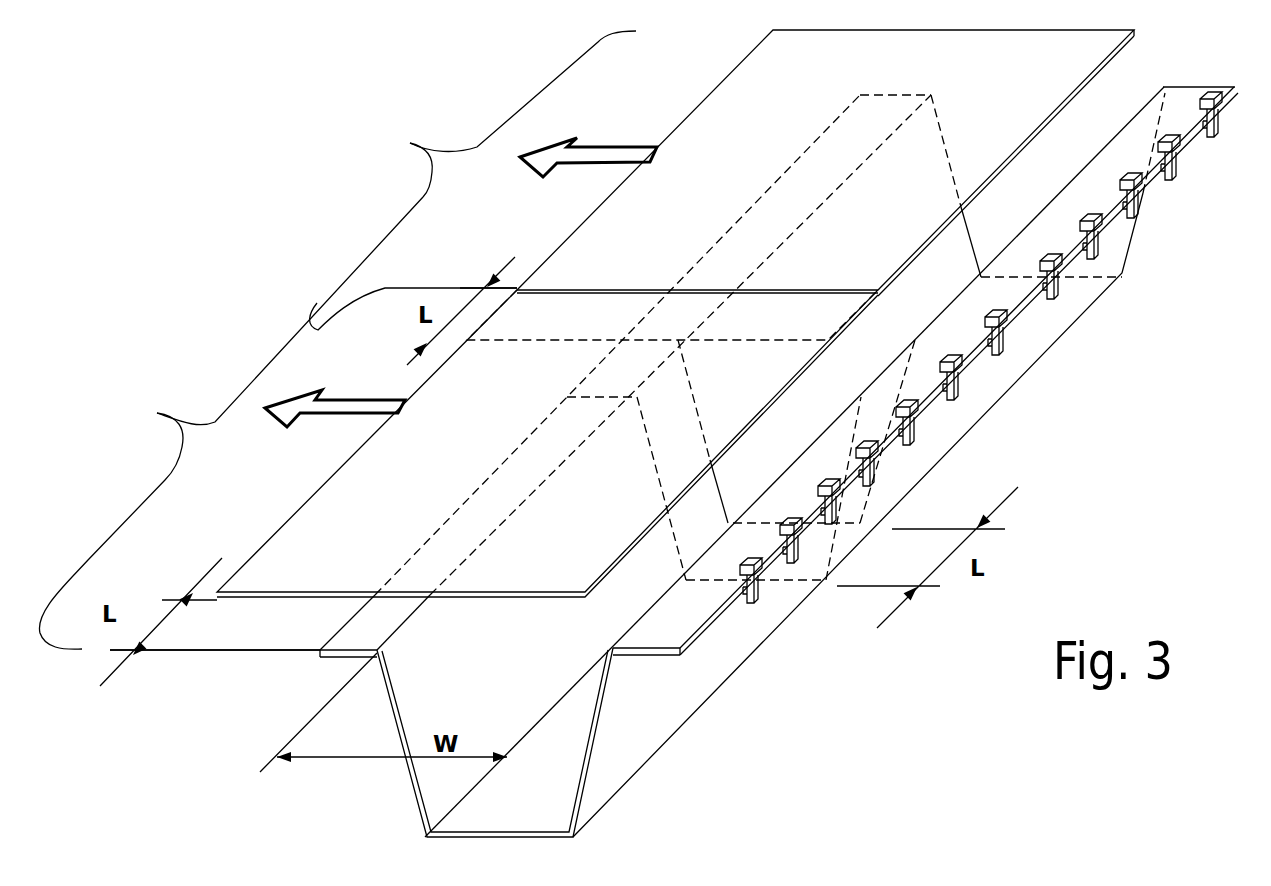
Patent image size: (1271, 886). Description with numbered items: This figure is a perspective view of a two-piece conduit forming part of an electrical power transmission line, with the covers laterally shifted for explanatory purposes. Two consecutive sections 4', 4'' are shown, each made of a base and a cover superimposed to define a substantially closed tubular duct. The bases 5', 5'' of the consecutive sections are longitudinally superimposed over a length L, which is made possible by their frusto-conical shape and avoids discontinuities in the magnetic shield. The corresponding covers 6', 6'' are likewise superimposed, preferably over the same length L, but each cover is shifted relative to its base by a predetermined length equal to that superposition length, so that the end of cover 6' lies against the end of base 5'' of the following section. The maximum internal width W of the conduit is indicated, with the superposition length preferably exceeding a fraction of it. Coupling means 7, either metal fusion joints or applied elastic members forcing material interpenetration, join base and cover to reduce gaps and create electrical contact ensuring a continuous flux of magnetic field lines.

The section 4' is at (231, 423).
The following section 4'' is at (473, 180).
The base 5' is at (674, 462).
The base 5'' is at (956, 305).
The cover 6' is at (546, 443).
The cover 6'' is at (800, 185).
The coupling means 7 is at (1040, 270).